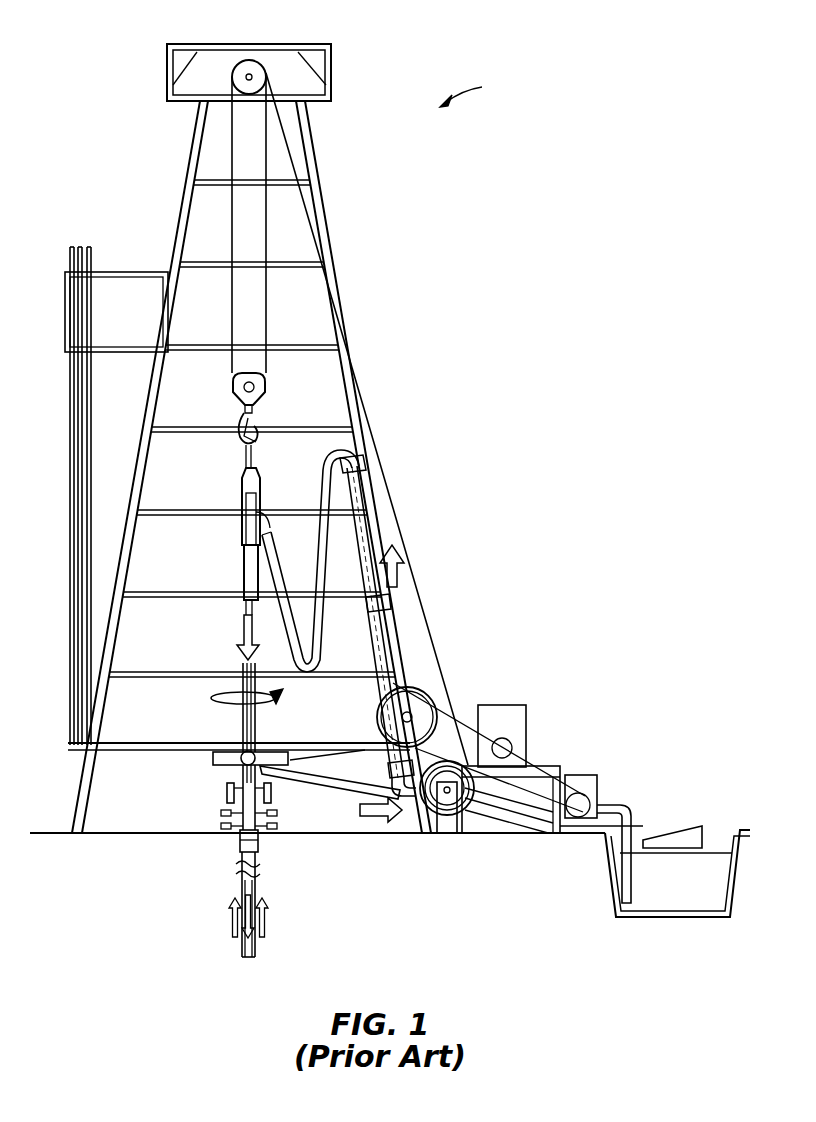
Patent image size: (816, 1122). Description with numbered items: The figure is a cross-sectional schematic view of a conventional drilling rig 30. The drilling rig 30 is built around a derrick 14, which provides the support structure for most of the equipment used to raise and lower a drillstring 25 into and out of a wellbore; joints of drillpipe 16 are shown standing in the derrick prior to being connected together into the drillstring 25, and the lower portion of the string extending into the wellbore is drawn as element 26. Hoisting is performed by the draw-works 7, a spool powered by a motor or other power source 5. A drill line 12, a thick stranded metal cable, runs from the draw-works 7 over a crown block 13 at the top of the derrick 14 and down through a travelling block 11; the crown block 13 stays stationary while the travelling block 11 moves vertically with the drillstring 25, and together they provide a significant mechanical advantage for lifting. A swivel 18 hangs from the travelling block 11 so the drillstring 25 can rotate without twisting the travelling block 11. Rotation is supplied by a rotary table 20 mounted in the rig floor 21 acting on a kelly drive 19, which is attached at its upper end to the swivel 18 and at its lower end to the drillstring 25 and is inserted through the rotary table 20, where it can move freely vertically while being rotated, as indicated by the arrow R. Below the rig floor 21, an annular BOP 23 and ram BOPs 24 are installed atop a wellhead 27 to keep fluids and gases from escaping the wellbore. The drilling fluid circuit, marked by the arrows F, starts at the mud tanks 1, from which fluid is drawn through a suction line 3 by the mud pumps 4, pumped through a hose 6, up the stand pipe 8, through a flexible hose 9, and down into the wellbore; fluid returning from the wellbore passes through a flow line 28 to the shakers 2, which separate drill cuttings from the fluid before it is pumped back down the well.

The mud tank 1 is at (710, 857).
The shaker 2 is at (688, 828).
The suction line 3 is at (620, 805).
The mud pump 4 is at (583, 778).
The motor or other power source 5 is at (505, 708).
The hose 6 is at (557, 793).
The draw-works 7 is at (447, 778).
The stand pipe 8 is at (378, 642).
The flexible hose 9 is at (318, 568).
The travelling block 11 is at (233, 395).
The drill line 12 is at (310, 212).
The crown block 13 is at (250, 60).
The derrick 14 is at (183, 194).
The drillpipe 16 is at (70, 430).
The swivel 18 is at (243, 570).
The kelly drive 19 is at (243, 660).
The rotary table 20 is at (223, 752).
The rig floor 21 is at (300, 742).
The annular BOP 23 is at (227, 794).
The ram BOP 24 is at (233, 813).
The drillstring 25 is at (240, 862).
The drill string 26 is at (245, 950).
The wellhead 27 is at (260, 847).
The flow line 28 is at (337, 792).
The drilling rig 30 is at (480, 91).